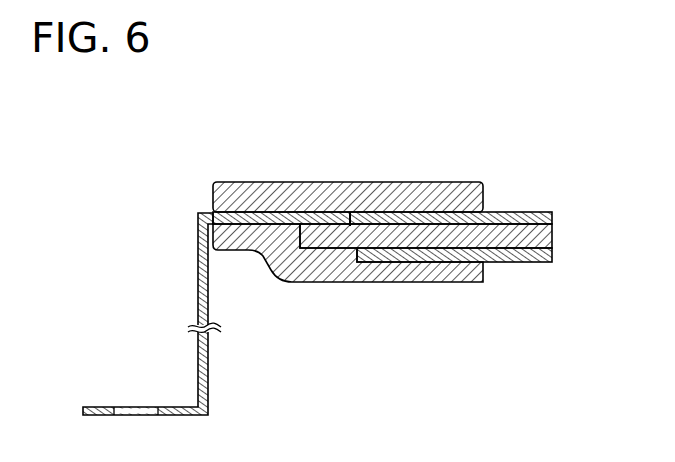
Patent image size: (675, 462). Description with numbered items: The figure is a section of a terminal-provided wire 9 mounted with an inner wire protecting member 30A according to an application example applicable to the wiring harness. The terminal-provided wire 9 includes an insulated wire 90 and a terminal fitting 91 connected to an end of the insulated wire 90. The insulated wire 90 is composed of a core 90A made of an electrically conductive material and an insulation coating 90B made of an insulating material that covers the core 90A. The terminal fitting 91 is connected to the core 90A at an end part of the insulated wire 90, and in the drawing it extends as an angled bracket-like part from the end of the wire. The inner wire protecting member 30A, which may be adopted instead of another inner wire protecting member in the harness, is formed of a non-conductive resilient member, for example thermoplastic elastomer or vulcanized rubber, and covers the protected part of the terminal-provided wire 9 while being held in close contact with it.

The inner wire protecting member 30A is at (442, 284).
The terminal fitting 91 is at (209, 349).
The insulated wire 90 is at (418, 232).
The core 90A is at (553, 222).
The insulation coating 90B is at (553, 255).
The terminal-provided wire 9 is at (554, 263).